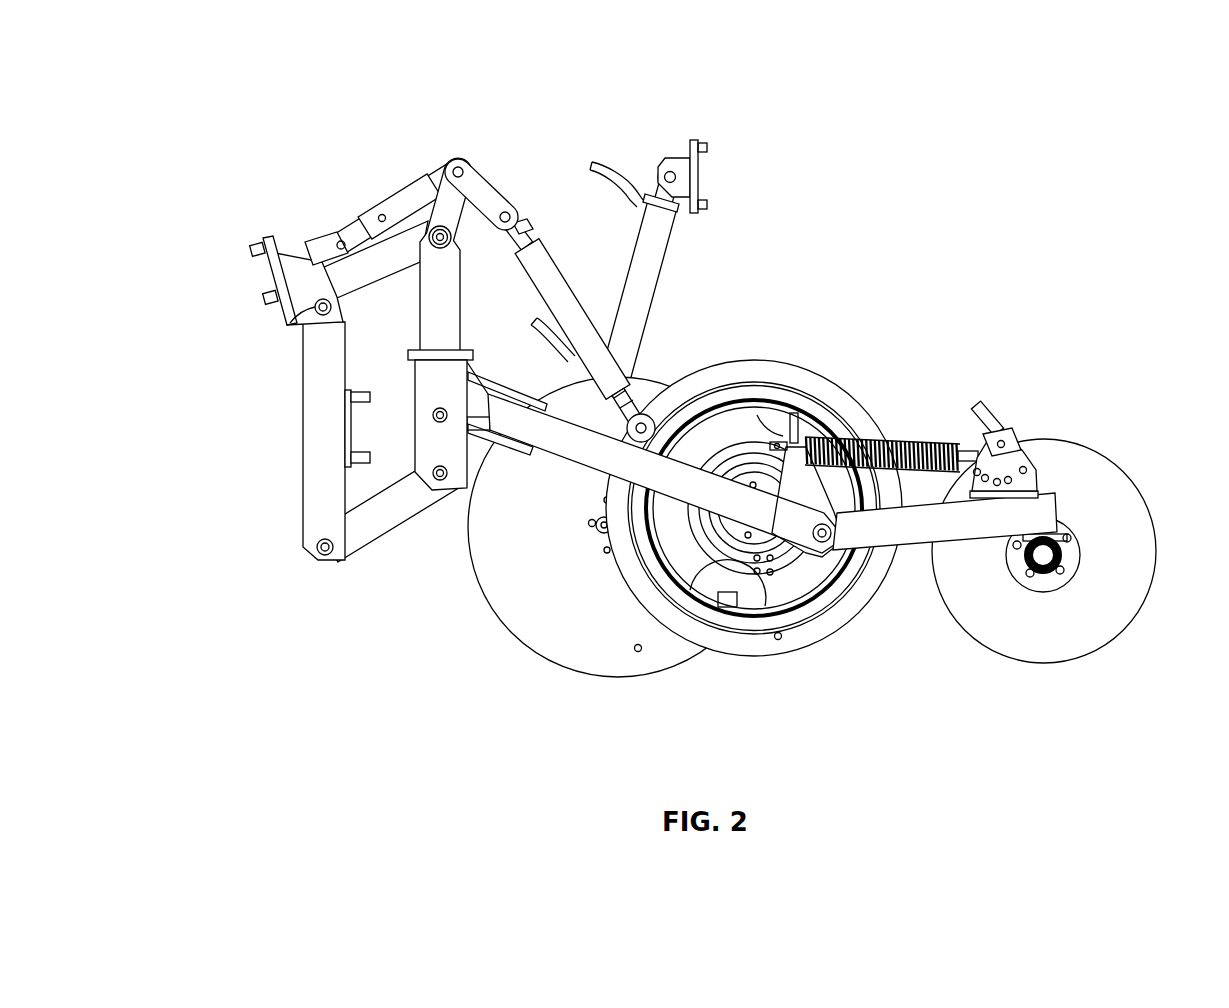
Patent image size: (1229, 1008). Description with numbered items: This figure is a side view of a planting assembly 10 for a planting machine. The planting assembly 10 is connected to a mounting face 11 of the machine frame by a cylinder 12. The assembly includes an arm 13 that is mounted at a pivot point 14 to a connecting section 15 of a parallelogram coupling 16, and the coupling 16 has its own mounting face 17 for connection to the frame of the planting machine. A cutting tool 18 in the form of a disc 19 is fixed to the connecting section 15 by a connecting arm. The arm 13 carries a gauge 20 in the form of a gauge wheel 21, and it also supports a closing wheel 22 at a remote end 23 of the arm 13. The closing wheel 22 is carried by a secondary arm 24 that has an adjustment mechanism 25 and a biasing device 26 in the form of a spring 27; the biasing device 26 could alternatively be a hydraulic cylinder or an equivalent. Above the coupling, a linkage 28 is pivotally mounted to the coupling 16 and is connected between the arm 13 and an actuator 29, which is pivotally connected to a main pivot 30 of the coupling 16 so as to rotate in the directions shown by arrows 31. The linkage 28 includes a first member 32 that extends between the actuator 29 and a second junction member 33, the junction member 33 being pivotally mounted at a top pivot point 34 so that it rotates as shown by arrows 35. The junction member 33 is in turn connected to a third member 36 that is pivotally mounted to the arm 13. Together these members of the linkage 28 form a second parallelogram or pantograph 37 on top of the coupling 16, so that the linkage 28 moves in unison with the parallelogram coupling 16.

The planting assembly 10 is at (1150, 136).
The mounting face 11 is at (700, 181).
The cylinder 12 is at (657, 277).
The arm 13 is at (560, 463).
The pivot point 14 is at (433, 413).
The connecting section 15 is at (417, 427).
The parallelogram coupling 16 is at (348, 557).
The mounting face 17 is at (353, 421).
The cutting tool 18 is at (617, 680).
The disc 19 is at (642, 653).
The gauge 20 is at (760, 663).
The gauge wheel 21 is at (779, 641).
The closing wheel 22 is at (1040, 664).
The remote end 23 is at (796, 556).
The secondary arm 24 is at (918, 549).
The adjustment mechanism 25 is at (1018, 443).
The biasing device 26 is at (972, 462).
The spring 27 is at (873, 437).
The linkage 28 is at (362, 213).
The actuator 29 is at (321, 234).
The main pivot 30 is at (318, 312).
The arrows 31 is at (276, 184).
The first member 32 is at (380, 214).
The second junction member 33 is at (452, 137).
The top pivot point 34 is at (444, 244).
The arrows 35 is at (517, 177).
The third member 36 is at (547, 257).
The pantograph 37 is at (409, 182).